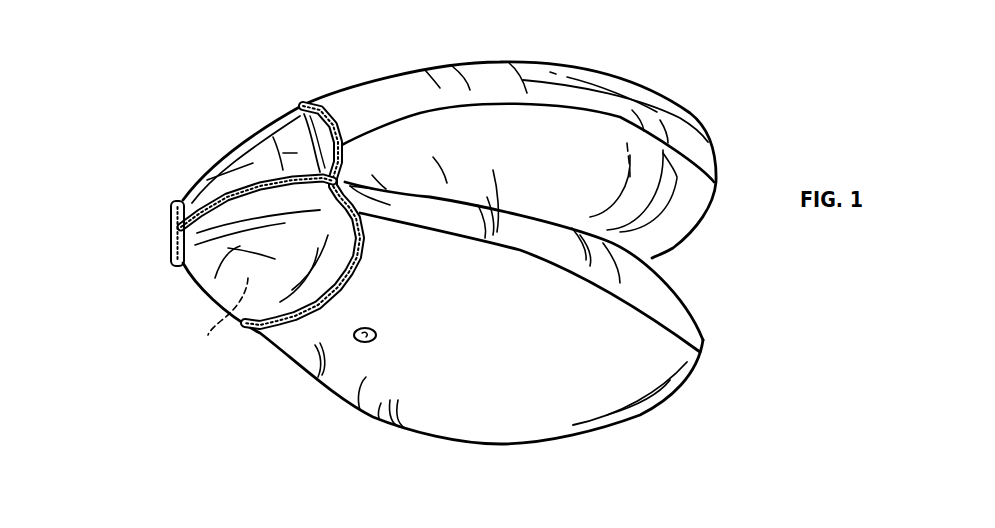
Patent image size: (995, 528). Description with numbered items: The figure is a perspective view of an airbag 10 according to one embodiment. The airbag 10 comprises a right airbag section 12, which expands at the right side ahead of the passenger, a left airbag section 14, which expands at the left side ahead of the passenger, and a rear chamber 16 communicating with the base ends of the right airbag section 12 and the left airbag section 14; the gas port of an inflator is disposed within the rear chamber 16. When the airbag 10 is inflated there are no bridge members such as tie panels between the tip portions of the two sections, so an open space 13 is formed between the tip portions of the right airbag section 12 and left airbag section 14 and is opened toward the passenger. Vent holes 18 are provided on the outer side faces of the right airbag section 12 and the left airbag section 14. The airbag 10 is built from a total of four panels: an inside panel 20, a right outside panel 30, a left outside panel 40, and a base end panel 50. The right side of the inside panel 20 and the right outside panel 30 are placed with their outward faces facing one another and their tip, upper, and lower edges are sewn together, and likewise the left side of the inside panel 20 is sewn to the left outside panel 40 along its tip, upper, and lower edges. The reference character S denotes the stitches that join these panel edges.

The airbag 10 is at (535, 45).
The right airbag section 12 is at (604, 88).
The open space 13 is at (660, 267).
The left airbag section 14 is at (555, 425).
The rear chamber 16 is at (144, 320).
The vent hole 18 is at (376, 338).
The inside panel 20 is at (677, 306).
The right outside panel 30 is at (407, 77).
The left outside panel 40 is at (375, 418).
The base end panel 50 is at (253, 143).
The stitches S is at (182, 205).